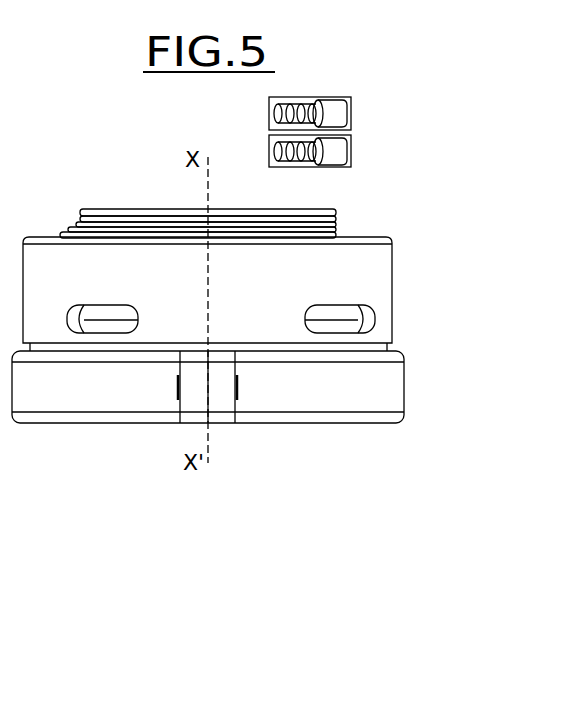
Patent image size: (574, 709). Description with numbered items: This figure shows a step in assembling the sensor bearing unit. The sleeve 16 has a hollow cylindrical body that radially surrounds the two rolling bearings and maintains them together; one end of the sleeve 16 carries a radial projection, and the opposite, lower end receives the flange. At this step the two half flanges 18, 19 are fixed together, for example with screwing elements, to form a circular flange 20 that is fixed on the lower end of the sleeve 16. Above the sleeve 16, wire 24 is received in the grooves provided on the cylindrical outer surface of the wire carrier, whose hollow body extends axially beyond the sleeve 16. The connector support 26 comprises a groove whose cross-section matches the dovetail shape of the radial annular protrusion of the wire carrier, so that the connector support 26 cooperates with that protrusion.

The sleeve 16 is at (396, 291).
The half flange 18 is at (97, 397).
The half flange 19 is at (322, 397).
The flange 20 is at (406, 395).
The wire 24 is at (336, 211).
The connector support 26 is at (355, 114).